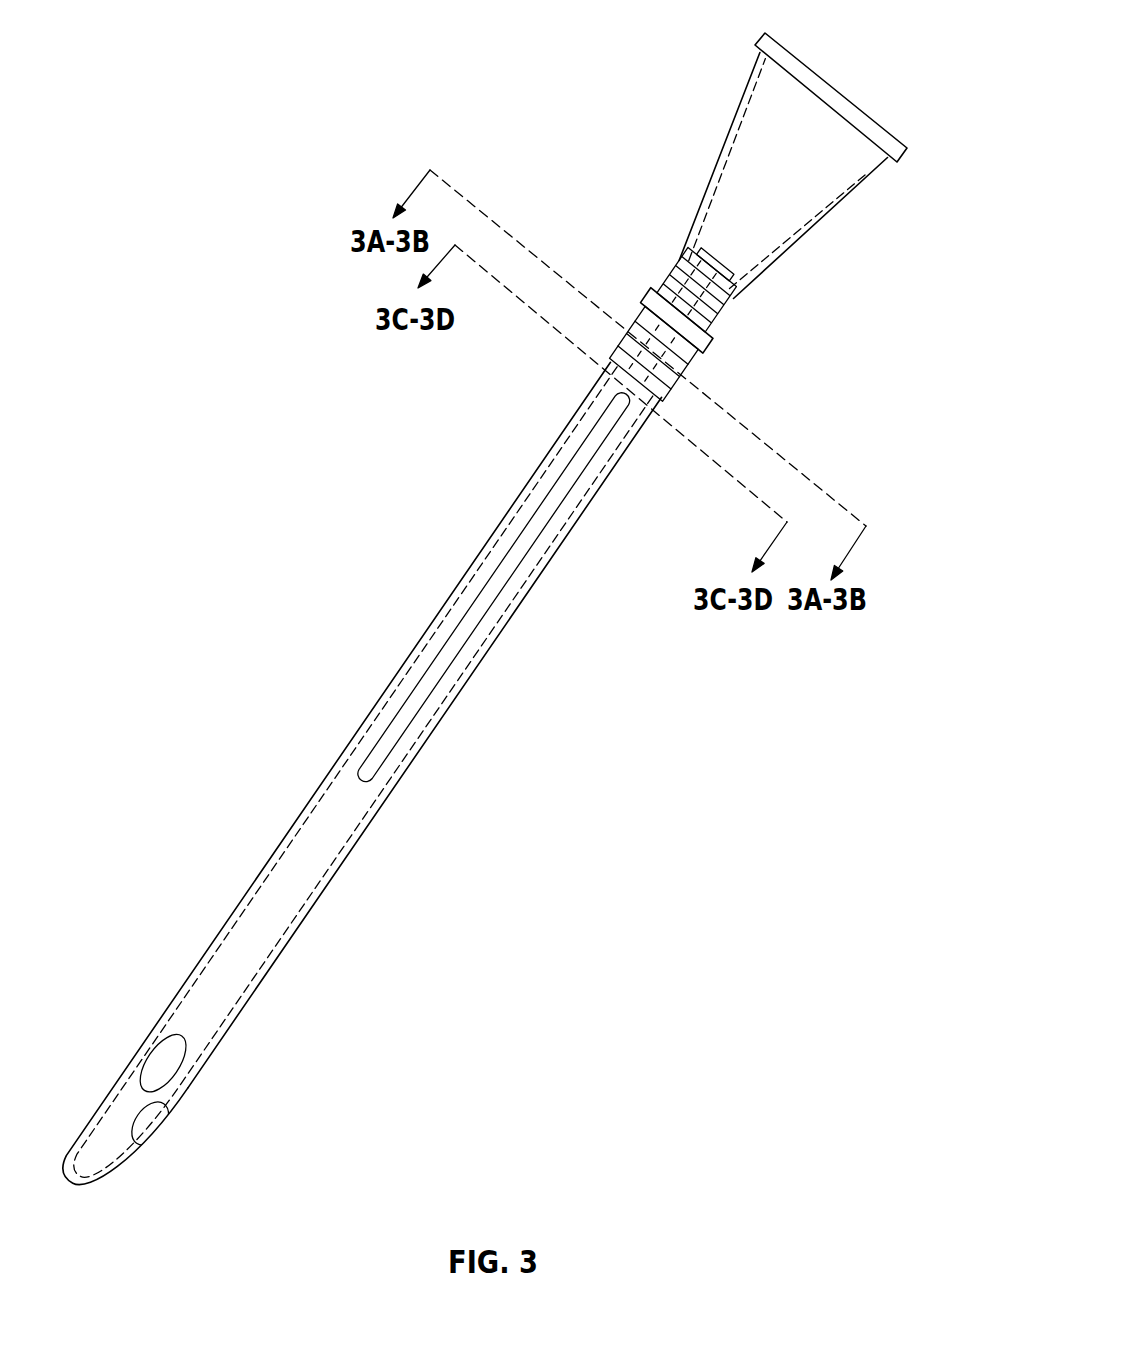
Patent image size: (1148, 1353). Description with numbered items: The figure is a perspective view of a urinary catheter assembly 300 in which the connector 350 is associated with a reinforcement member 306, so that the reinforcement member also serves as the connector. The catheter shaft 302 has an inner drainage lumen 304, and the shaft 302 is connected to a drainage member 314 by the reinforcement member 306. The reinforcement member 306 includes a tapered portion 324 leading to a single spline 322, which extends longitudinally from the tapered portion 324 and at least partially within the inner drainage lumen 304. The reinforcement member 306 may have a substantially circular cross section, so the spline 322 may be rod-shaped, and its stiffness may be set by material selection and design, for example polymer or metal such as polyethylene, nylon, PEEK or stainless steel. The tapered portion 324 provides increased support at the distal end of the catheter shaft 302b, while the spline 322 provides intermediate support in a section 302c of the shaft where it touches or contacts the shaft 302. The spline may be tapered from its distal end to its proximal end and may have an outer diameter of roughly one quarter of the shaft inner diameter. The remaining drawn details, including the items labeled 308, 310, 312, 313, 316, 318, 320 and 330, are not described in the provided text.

The urinary catheter assembly 300 is at (404, 541).
The catheter shaft 302 is at (151, 1000).
The distal end of the catheter shaft 302b is at (636, 320).
The section of the shaft 302c is at (430, 628).
The inner drainage lumen 304 is at (280, 853).
The reinforcement member 306 is at (528, 517).
The inner tube 308 is at (625, 338).
The outer tube wall 310 is at (333, 870).
The nut 312 is at (676, 378).
The threaded section 313 is at (733, 293).
The drainage member 314 is at (725, 165).
The funnel neck 316 is at (710, 246).
The funnel 318 is at (851, 64).
The funnel wall 320 is at (835, 207).
The spline 322 is at (480, 620).
The tapered portion 324 is at (647, 397).
The flange 330 is at (652, 300).
The connector 350 is at (578, 437).